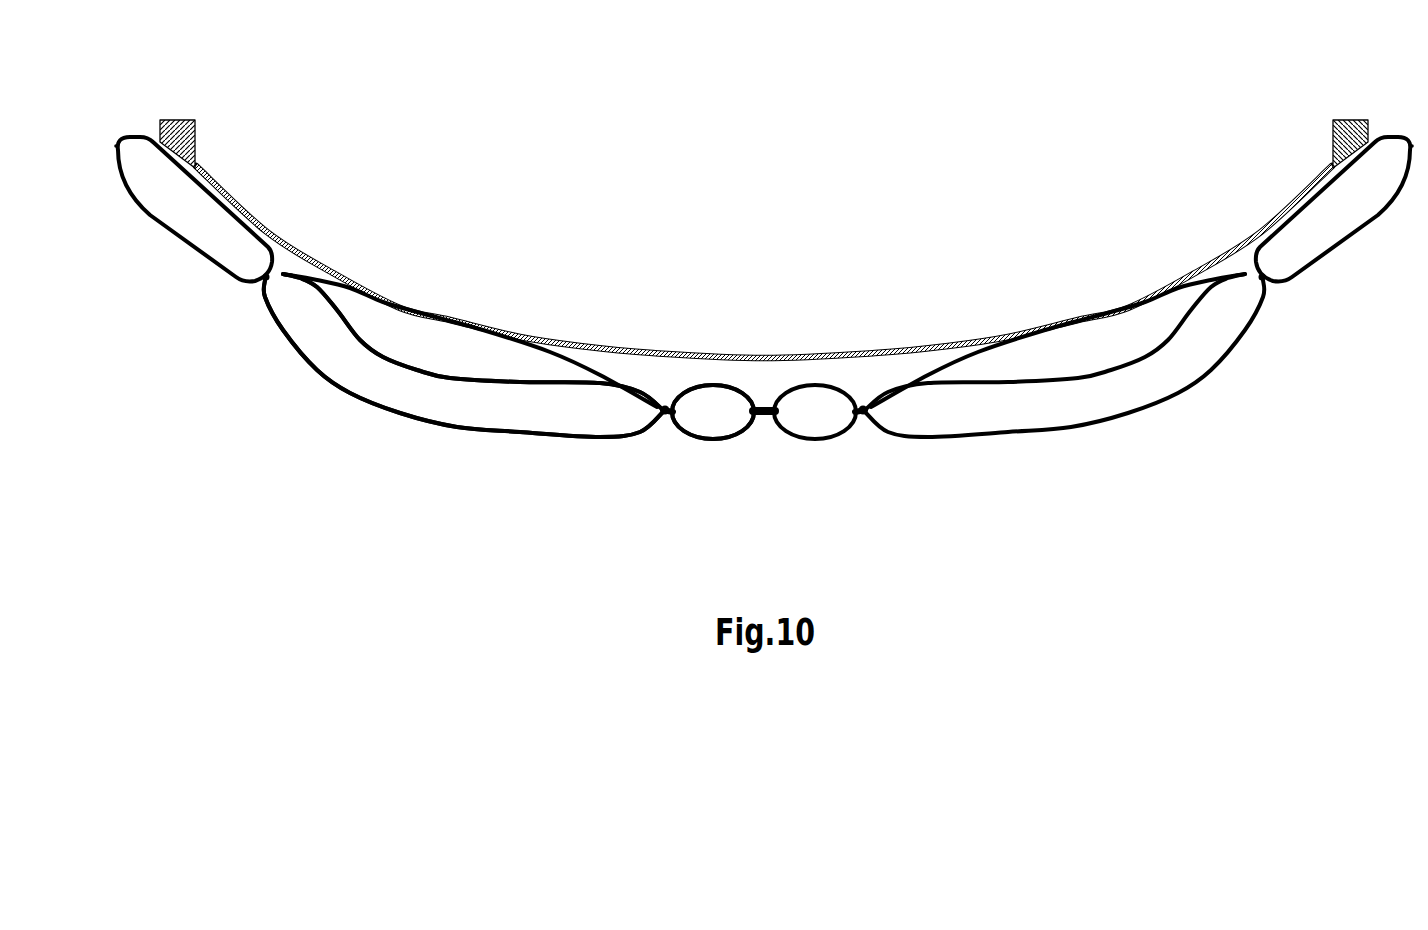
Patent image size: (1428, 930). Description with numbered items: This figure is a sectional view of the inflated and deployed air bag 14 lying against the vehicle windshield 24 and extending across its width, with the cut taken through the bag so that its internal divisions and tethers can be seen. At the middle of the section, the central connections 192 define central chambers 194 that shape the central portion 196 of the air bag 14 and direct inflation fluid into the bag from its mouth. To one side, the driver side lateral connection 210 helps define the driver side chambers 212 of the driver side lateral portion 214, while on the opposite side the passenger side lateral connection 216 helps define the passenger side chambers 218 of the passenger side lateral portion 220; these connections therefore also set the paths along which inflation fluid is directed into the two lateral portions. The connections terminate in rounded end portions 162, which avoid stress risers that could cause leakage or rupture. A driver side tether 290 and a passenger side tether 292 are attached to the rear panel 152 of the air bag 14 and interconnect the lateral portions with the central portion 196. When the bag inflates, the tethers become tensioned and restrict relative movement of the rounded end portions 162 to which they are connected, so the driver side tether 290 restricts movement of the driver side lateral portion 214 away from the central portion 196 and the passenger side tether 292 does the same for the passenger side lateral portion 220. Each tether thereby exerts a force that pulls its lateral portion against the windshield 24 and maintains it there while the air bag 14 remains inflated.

The air bag 14 is at (525, 435).
The windshield 24 is at (653, 350).
The rear panel 152 is at (525, 380).
The end portions 162 is at (777, 406).
The central connections 192 is at (862, 417).
The central chambers 194 is at (728, 407).
The central portion 196 is at (712, 412).
The driver side lateral connection 210 is at (1263, 280).
The driver side chambers 212 is at (1307, 225).
The driver side lateral portion 214 is at (1130, 395).
The passenger side lateral connection 216 is at (265, 279).
The passenger side chambers 218 is at (318, 327).
The passenger side lateral portion 220 is at (357, 377).
The driver side tether 290 is at (990, 337).
The passenger side tether 292 is at (375, 295).